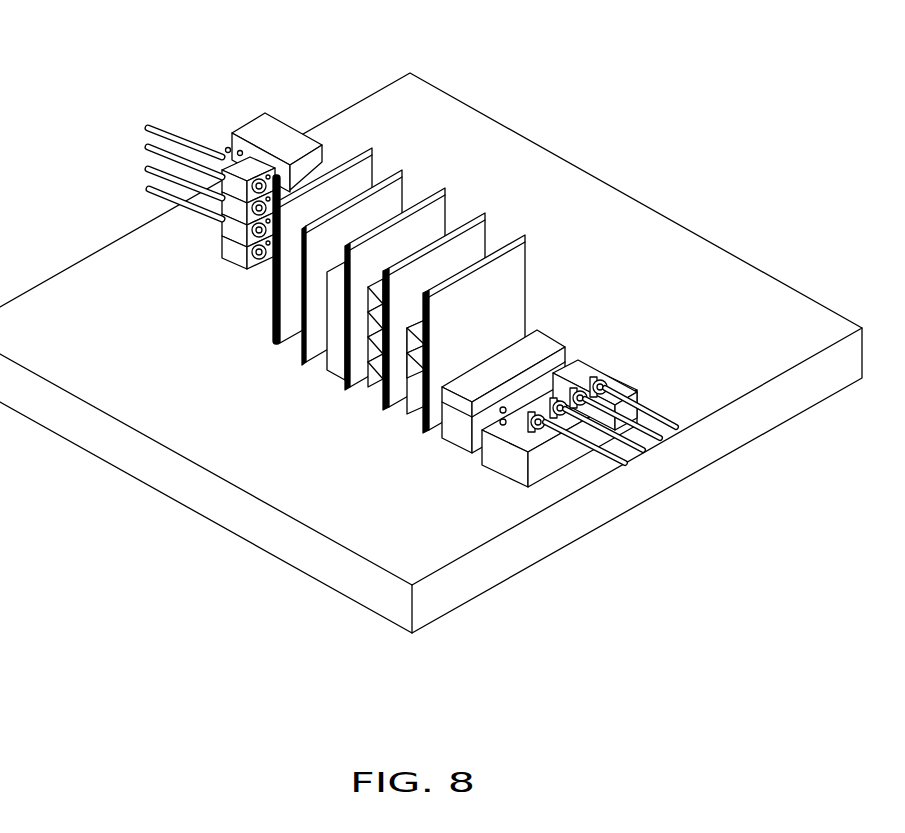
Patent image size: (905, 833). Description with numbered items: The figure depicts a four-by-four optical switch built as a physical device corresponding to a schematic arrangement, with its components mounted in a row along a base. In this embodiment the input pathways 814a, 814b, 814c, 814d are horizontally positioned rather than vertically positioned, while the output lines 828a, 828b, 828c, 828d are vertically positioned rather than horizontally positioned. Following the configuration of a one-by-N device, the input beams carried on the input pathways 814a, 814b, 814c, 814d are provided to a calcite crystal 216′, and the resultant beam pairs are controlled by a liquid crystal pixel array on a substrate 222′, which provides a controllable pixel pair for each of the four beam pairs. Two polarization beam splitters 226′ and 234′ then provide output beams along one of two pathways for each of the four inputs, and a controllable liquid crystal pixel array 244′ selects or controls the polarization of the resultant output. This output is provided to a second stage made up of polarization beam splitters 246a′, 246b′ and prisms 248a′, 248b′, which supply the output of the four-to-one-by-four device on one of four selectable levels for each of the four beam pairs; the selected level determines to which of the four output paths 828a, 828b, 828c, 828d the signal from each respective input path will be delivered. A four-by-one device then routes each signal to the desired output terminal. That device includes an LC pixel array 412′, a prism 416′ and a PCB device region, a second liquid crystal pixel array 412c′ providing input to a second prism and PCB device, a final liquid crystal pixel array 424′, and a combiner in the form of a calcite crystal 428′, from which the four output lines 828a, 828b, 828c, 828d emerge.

The output line 828a is at (159, 126).
The output line 828b is at (147, 146).
The output line 828c is at (147, 173).
The output line 828d is at (147, 191).
The calcite crystal 428′ is at (300, 182).
The final liquid crystal pixel array 424′ is at (272, 274).
The prism 416′ is at (300, 298).
The second liquid crystal pixel array 412c′ is at (405, 173).
The LC pixel array 412′ is at (445, 197).
The controllable liquid crystal pixel array 244′ is at (488, 225).
The substrate 222′ is at (527, 243).
The calcite crystal 216′ is at (553, 333).
The prism 248b′ is at (368, 297).
The prism 248a′ is at (368, 318).
The polarization beam splitter 246b′ is at (371, 345).
The polarization beam splitter 246a′ is at (373, 368).
The polarization beam splitter 234′ is at (405, 342).
The polarization beam splitter 226′ is at (408, 392).
The input pathway 814a is at (680, 427).
The input pathway 814b is at (665, 438).
The input pathway 814c is at (645, 452).
The input pathway 814d is at (628, 465).